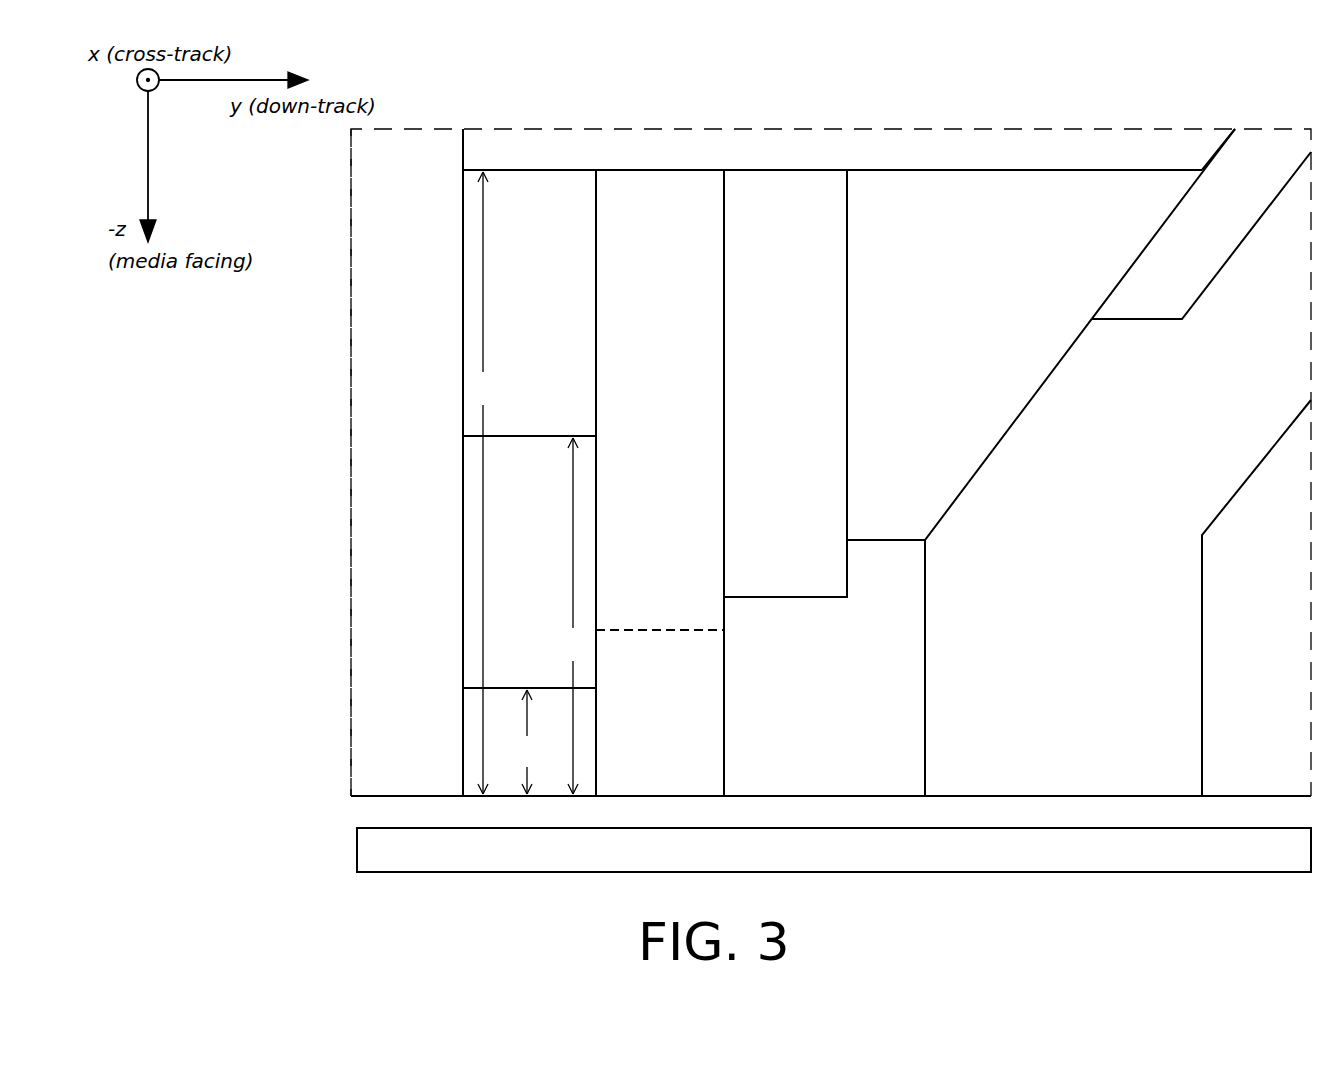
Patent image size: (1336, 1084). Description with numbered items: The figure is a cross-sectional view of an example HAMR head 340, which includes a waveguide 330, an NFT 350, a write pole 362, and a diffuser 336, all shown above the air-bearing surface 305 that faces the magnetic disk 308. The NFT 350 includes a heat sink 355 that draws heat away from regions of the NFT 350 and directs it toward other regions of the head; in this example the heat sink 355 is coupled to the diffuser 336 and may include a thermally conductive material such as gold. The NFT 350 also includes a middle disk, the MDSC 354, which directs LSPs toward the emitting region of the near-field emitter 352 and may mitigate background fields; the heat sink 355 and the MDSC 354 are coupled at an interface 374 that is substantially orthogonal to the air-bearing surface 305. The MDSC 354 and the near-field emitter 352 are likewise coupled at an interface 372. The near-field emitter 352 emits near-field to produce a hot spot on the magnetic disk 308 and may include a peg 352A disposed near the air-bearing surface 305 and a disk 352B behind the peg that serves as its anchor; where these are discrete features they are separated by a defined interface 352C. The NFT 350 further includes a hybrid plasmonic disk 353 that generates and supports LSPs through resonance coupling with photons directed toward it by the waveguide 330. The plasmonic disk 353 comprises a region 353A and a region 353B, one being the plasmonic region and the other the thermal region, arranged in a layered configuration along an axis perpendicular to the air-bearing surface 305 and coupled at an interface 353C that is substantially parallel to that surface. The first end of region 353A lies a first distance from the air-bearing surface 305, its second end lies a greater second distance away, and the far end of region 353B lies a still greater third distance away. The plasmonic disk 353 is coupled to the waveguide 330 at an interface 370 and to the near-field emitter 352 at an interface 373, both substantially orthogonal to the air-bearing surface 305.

The air-bearing surface 305 is at (358, 798).
The magnetic disk 308 is at (362, 846).
The waveguide 330 is at (431, 587).
The diffuser 336 is at (1212, 261).
The HAMR head 340 is at (1166, 112).
The NFT 350 is at (825, 144).
The near-field emitter 352 is at (686, 445).
The peg 352A is at (705, 745).
The disk 352B is at (704, 270).
The interface 352C is at (654, 628).
The plasmonic disk 353 is at (440, 412).
The region 353A is at (565, 580).
The region 353B is at (565, 317).
The interface 353C is at (538, 433).
The middle disk (MDSC) 354 is at (809, 398).
The heat sink 355 is at (989, 343).
The write pole 362 is at (1199, 440).
The interface 370 is at (463, 172).
The interface 372 is at (724, 170).
The interface 373 is at (596, 170).
The interface 374 is at (847, 172).